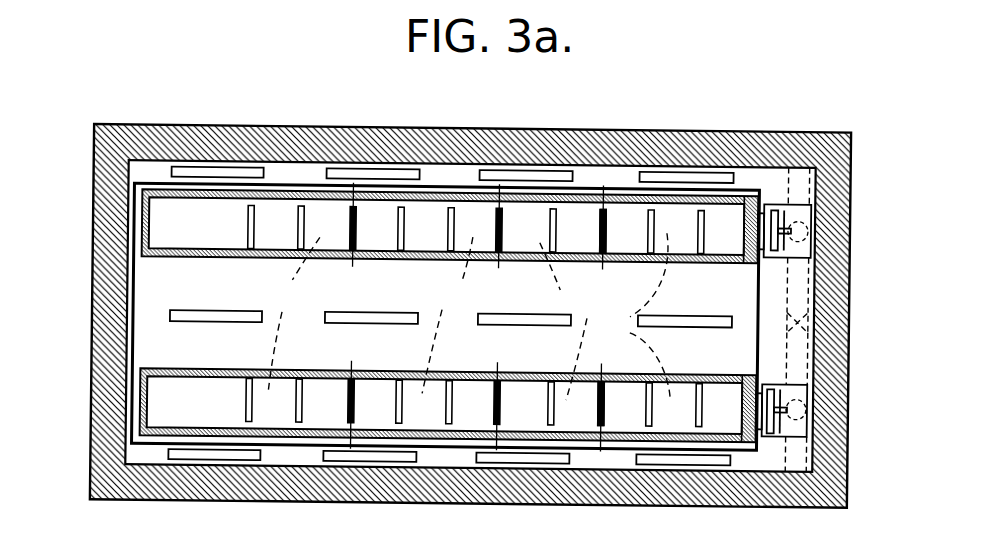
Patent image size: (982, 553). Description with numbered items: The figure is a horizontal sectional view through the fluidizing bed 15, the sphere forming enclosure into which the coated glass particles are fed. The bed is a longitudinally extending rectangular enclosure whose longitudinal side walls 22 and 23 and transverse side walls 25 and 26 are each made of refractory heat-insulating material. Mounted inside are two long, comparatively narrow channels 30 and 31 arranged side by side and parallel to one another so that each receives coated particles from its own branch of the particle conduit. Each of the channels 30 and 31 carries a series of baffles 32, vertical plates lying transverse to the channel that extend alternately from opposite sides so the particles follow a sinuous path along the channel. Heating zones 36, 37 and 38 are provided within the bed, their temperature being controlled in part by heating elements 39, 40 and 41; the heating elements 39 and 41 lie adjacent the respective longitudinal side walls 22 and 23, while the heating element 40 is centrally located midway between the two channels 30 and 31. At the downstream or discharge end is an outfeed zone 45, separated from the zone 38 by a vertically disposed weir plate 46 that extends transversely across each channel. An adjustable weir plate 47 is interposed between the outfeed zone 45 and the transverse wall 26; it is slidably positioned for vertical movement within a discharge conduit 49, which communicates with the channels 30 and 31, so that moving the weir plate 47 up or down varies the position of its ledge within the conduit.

The fluidizing bed 15 is at (140, 124).
The longitudinal side wall 22 is at (202, 504).
The longitudinal side wall 23 is at (248, 130).
The transverse side wall 25 is at (91, 309).
The transverse side wall 26 is at (850, 273).
The channel 30 is at (285, 439).
The channel 31 is at (279, 193).
The baffles 32 is at (446, 238).
The heating zone 36 is at (294, 315).
The heating zone 37 is at (447, 315).
The heating zone 38 is at (569, 322).
The heating element 39 is at (650, 463).
The heating element 40 is at (222, 314).
The heating element 41 is at (659, 171).
The outfeed zone 45 is at (635, 314).
The weir plate 46 is at (605, 244).
The adjustable weir plate 47 is at (781, 217).
The discharge conduit 49 is at (812, 319).